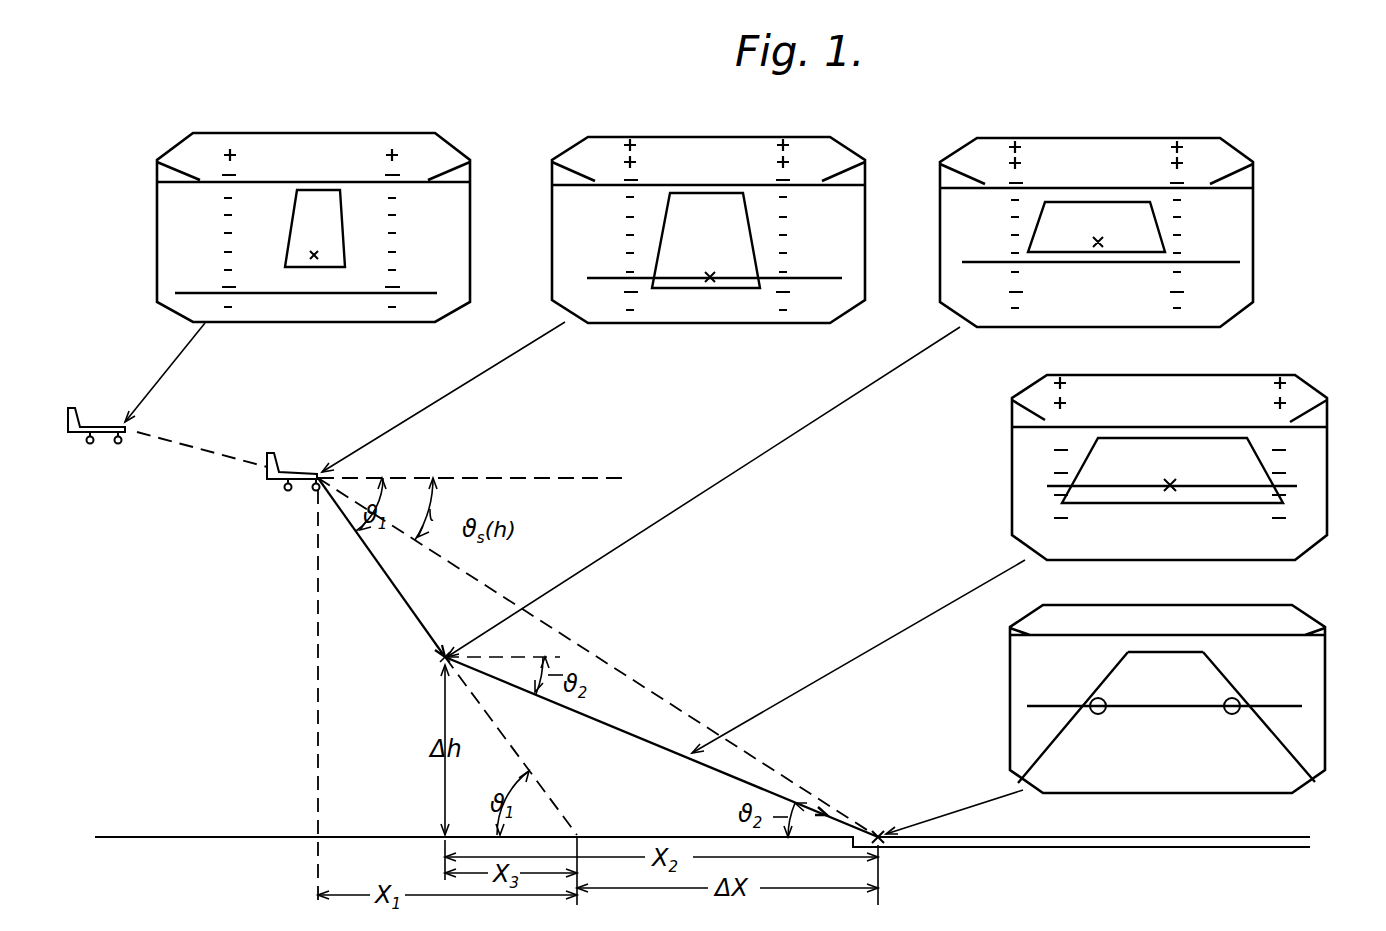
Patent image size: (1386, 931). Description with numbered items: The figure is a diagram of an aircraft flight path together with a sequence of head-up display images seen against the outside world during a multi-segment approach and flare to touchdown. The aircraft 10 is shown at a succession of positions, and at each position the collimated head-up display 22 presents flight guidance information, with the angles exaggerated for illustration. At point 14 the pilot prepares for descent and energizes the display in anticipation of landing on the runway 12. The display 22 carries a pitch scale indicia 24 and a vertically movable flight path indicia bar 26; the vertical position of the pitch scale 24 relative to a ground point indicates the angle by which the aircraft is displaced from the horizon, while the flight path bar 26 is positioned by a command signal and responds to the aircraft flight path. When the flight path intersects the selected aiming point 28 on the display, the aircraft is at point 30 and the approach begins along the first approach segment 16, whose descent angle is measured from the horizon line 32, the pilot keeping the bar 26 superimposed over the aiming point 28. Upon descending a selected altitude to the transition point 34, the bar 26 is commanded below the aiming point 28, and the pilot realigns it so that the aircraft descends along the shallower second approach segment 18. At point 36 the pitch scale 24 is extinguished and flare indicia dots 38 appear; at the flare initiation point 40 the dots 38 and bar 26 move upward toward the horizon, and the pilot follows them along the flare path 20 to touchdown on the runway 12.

The aircraft 10 is at (75, 432).
The runway 12 is at (297, 212).
The point 14 is at (115, 420).
The first approach segment 16 is at (402, 598).
The second approach segment 18 is at (628, 737).
The flare path 20 is at (866, 825).
The head-up display 22 is at (450, 142).
The pitch scale indicia 24 is at (232, 148).
The flight path indicia bar 26 is at (428, 290).
The aiming point 28 is at (310, 256).
The point 30 is at (326, 477).
The horizon line 32 is at (471, 477).
The transition point 34 is at (443, 657).
The point 36 is at (760, 787).
The flare indicia dots 38 is at (1228, 700).
The flare initiation point 40 is at (832, 815).